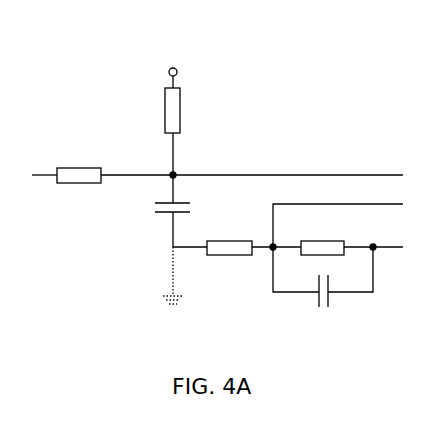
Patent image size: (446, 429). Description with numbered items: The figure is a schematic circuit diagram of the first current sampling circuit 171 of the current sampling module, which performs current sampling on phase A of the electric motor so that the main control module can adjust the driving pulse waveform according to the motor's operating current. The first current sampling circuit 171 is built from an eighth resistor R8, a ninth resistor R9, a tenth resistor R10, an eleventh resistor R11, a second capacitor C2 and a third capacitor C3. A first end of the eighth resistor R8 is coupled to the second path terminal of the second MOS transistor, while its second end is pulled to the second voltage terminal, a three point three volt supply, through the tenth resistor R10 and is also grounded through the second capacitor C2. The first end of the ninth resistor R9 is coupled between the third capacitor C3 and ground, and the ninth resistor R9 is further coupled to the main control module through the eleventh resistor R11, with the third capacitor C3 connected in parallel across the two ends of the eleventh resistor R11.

The first current sampling circuit 171 is at (252, 32).
The eighth resistor R8 is at (79, 164).
The ninth resistor R9 is at (229, 238).
The tenth resistor R10 is at (189, 110).
The eleventh resistor R11 is at (322, 237).
The second capacitor C2 is at (157, 208).
The third capacitor C3 is at (338, 288).